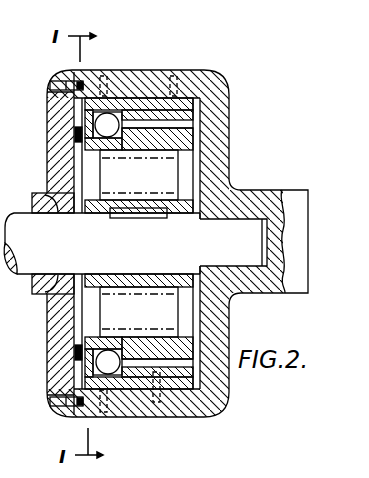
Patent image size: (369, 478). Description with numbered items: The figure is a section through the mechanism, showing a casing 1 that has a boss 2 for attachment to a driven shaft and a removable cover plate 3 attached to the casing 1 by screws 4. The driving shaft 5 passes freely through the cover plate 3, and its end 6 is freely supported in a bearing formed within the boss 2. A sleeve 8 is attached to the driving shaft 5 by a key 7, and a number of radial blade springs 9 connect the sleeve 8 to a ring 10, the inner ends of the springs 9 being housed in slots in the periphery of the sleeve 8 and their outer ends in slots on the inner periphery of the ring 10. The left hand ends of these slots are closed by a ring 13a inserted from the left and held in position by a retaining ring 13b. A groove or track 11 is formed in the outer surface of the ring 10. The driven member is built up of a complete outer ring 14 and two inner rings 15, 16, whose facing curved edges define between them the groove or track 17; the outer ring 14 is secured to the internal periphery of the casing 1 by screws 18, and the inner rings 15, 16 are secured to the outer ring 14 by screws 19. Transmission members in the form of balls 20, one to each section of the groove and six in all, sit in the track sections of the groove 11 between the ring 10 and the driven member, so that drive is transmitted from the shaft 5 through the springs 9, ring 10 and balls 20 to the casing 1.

The casing 1 is at (217, 122).
The boss 2 is at (288, 220).
The cover plate 3 is at (60, 117).
The screws 4 is at (79, 87).
The driving shaft 5 is at (35, 263).
The end of the driving shaft 6 is at (238, 255).
The key 7 is at (136, 213).
The sleeve 8 is at (185, 190).
The radial blade springs 9 is at (168, 185).
The ring 10 is at (188, 148).
The groove or track 11 is at (92, 132).
The ring 13a is at (58, 162).
The retaining ring 13b is at (80, 135).
The outer ring 14 is at (142, 112).
The inner ring 15 is at (208, 108).
The inner ring 16 is at (85, 117).
The groove or track 17 is at (117, 113).
The screws 18 is at (104, 98).
The screws 19 is at (43, 362).
The balls 20 is at (110, 133).